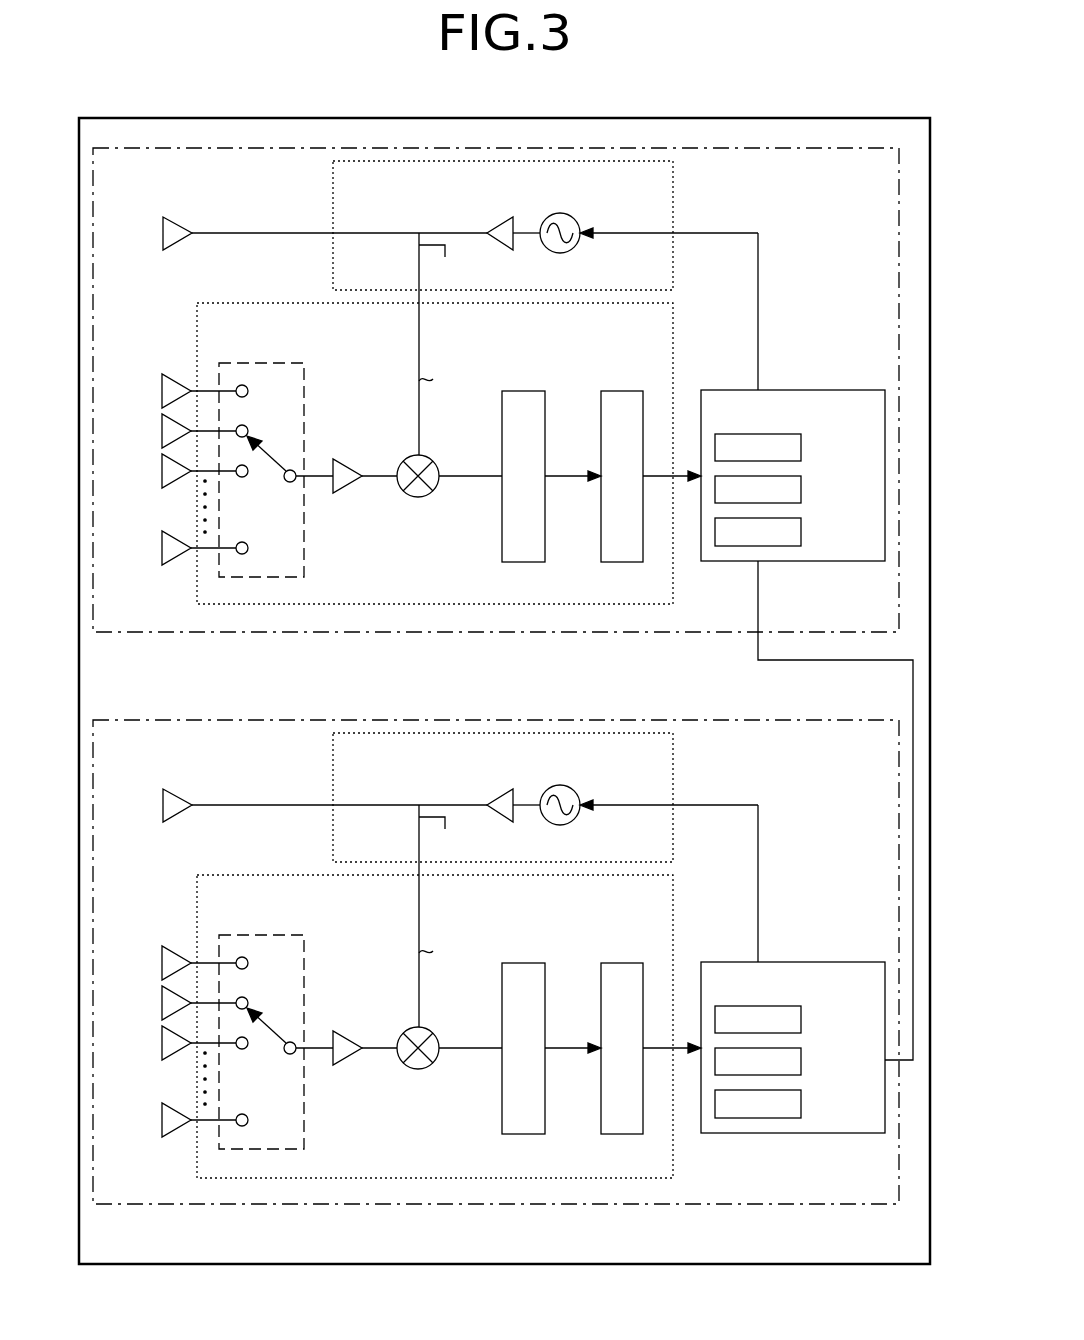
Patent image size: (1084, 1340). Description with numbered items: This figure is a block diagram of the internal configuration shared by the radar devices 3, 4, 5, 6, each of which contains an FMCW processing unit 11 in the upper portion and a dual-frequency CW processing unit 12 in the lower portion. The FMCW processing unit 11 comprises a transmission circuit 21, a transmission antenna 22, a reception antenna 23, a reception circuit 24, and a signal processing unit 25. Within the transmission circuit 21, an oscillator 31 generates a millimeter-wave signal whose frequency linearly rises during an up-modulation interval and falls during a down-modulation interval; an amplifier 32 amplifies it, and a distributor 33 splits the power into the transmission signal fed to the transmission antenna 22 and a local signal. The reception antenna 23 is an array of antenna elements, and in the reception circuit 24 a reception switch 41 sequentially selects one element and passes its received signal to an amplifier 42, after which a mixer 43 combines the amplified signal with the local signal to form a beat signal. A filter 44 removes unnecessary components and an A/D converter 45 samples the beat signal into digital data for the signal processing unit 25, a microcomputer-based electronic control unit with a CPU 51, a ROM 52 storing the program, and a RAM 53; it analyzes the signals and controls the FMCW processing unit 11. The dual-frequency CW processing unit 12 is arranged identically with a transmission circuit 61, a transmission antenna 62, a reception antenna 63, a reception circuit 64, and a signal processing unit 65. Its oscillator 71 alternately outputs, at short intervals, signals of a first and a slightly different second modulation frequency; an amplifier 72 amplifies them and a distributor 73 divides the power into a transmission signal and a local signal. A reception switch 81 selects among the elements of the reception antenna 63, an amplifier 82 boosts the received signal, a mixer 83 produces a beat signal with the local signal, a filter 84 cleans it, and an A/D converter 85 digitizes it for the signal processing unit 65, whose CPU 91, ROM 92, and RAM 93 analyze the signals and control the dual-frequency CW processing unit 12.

The radar device 3 is at (504, 669).
The radar device 4 is at (504, 669).
The radar device 5 is at (504, 669).
The radar device 6 is at (760, 117).
The FMCW processing unit 11 is at (812, 148).
The dual-frequency CW processing unit 12 is at (496, 947).
The transmission circuit 21 is at (673, 200).
The transmission antenna 22 is at (176, 217).
The reception antenna 23 is at (150, 369).
The reception circuit 24 is at (673, 345).
The signal processing unit 25 is at (778, 388).
The oscillator 31 is at (580, 223).
The amplifier 32 is at (500, 222).
The distributor 33 is at (414, 246).
The reception switch 41 is at (248, 362).
The amplifier 42 is at (345, 497).
The mixer 43 is at (418, 497).
The filter 44 is at (522, 390).
The A/D converter 45 is at (620, 390).
The CPU 51 is at (801, 447).
The ROM 52 is at (801, 489).
The RAM 53 is at (801, 532).
The transmission circuit 61 is at (545, 880).
The transmission antenna 62 is at (177, 784).
The reception antenna 63 is at (173, 1039).
The reception circuit 64 is at (419, 1019).
The signal processing unit 65 is at (793, 1018).
The oscillator 71 is at (591, 792).
The amplifier 72 is at (487, 791).
The distributor 73 is at (408, 916).
The reception switch 81 is at (261, 1020).
The amplifier 82 is at (347, 1074).
The mixer 83 is at (418, 1071).
The filter 84 is at (523, 1019).
The A/D converter 85 is at (622, 1019).
The CPU 91 is at (784, 1010).
The ROM 92 is at (784, 1052).
The RAM 93 is at (784, 1095).